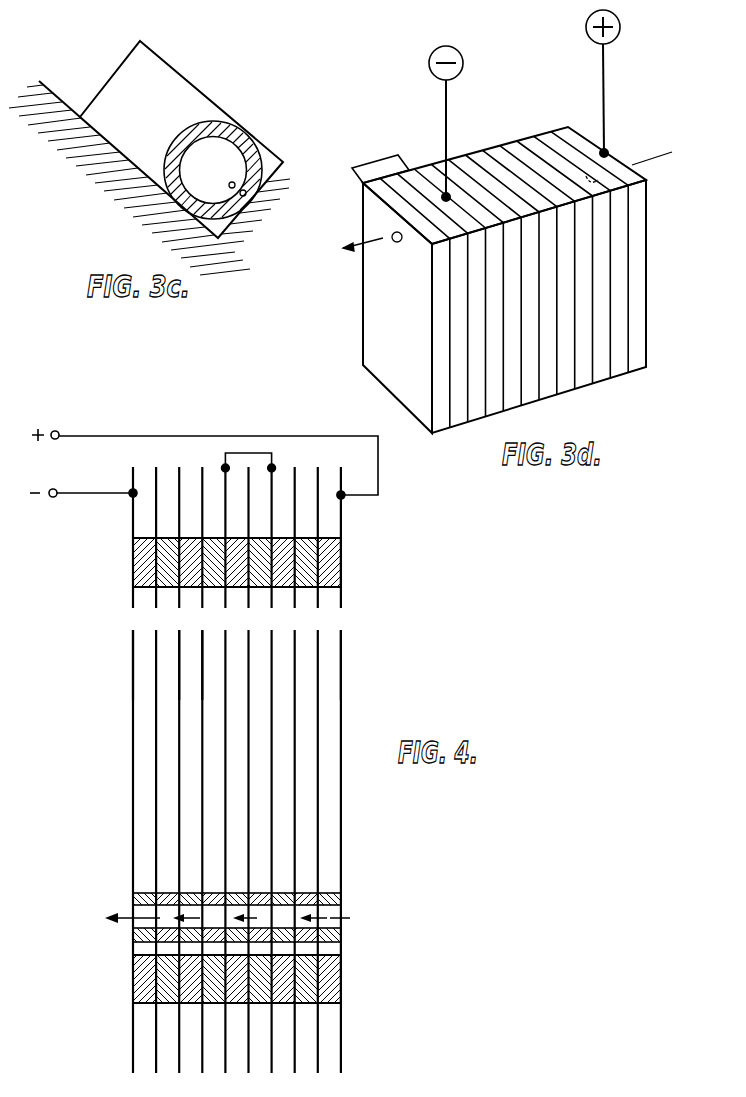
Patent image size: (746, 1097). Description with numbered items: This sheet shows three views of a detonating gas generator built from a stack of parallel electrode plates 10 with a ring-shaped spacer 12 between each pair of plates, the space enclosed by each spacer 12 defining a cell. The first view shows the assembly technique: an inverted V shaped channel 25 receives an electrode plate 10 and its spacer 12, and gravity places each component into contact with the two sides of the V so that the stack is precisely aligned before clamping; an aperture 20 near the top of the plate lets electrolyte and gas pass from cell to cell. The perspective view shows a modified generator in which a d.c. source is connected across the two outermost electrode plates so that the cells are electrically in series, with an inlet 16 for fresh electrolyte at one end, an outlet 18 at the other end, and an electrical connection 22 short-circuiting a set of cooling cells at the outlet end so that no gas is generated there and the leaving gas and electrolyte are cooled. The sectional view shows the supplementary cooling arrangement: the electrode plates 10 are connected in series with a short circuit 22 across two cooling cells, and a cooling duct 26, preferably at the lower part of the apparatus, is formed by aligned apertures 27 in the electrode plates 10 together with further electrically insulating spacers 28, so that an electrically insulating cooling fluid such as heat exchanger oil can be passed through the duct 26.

In FIG. 3C, the electrode plate 10 is at (170, 77).
In FIG. 3D, the electrode plate 10 is at (504, 280).
In FIG. 4, the electrode plate 10 is at (342, 688).
In FIG. 3C, the ring-shaped spacer 12 is at (240, 127).
In FIG. 4, the ring-shaped spacer 12 is at (327, 568).
In FIG. 3D, the inlet 16 is at (613, 160).
In FIG. 4, the inlet 16 is at (340, 620).
In FIG. 3D, the outlet 18 is at (396, 242).
In FIG. 4, the outlet 18 is at (132, 617).
In FIG. 3C, the aperture 20 is at (232, 182).
In FIG. 4, the aperture 20 is at (207, 620).
In FIG. 3D, the electrical connection 22 is at (380, 157).
In FIG. 4, the electrical connection 22 is at (248, 453).
In FIG. 3C, the support surface 25 is at (127, 180).
In FIG. 4, the cooling duct 26 is at (133, 922).
In FIG. 4, the aligned apertures 27 is at (340, 927).
In FIG. 4, the electrically insulating spacer 28 is at (320, 900).